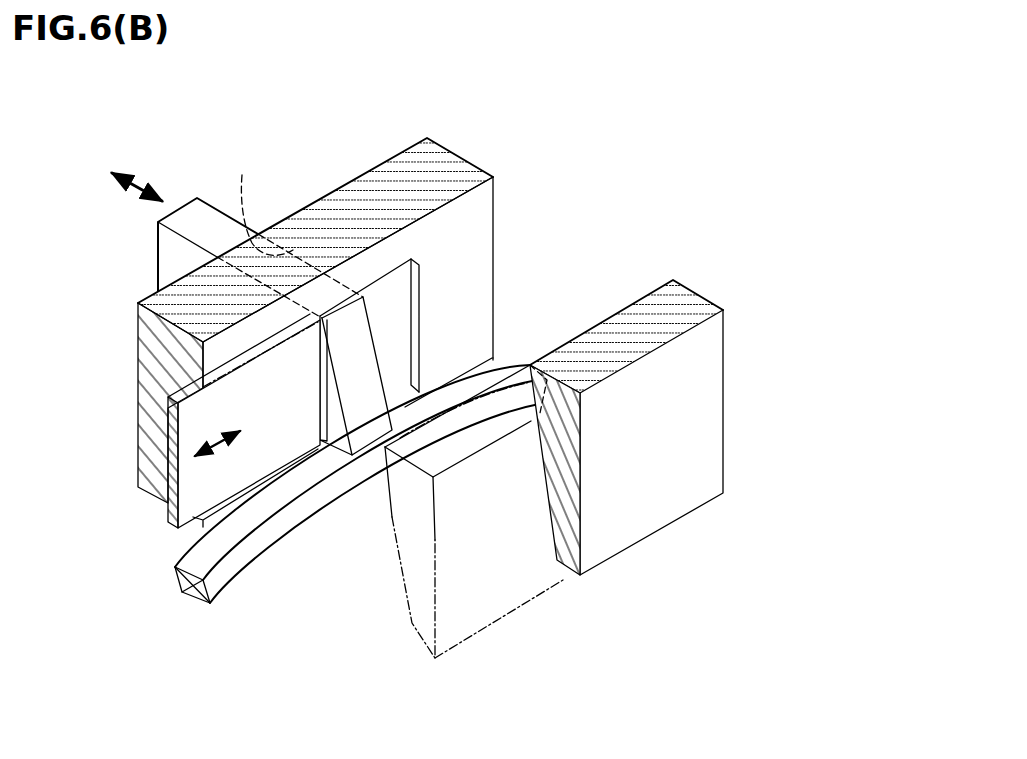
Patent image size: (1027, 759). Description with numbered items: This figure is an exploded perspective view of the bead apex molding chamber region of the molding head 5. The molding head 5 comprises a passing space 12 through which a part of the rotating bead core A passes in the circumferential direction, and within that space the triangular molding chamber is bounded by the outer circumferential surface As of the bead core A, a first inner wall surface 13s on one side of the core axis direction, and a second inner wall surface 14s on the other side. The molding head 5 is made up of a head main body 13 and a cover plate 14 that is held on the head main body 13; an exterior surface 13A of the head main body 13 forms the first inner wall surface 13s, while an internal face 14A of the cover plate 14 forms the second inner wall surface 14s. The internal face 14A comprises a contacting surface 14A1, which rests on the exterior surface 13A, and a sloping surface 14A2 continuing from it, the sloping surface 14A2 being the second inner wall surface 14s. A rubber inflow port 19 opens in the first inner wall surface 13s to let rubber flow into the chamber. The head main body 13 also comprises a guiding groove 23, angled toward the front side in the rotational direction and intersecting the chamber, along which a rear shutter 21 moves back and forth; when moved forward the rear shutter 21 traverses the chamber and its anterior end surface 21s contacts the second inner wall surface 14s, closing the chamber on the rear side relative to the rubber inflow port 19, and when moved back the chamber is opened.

The molding head 5 is at (333, 165).
The passing space 12 is at (533, 333).
The head main body 13 is at (412, 188).
The first inner wall surface 13s is at (391, 234).
The exterior surface 13A is at (467, 238).
The cover plate 14 is at (697, 365).
The internal face 14A is at (766, 594).
The contacting surface 14A1 is at (530, 410).
The sloping surface 14A2 is at (648, 496).
The second inner wall surface 14s is at (540, 518).
The rubber inflow port 19 is at (395, 380).
The rear shutter 21 is at (210, 227).
The anterior end surface 21s is at (362, 392).
The guiding groove 23 is at (260, 202).
The bead core A is at (250, 548).
The outer circumferential surface As is at (207, 560).